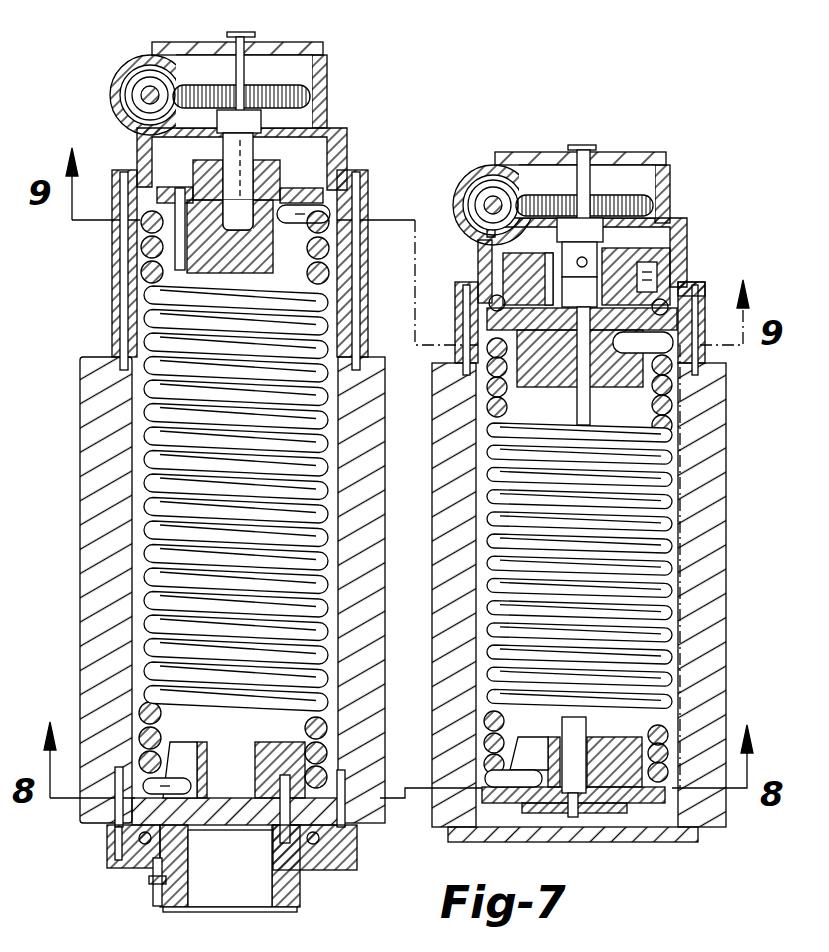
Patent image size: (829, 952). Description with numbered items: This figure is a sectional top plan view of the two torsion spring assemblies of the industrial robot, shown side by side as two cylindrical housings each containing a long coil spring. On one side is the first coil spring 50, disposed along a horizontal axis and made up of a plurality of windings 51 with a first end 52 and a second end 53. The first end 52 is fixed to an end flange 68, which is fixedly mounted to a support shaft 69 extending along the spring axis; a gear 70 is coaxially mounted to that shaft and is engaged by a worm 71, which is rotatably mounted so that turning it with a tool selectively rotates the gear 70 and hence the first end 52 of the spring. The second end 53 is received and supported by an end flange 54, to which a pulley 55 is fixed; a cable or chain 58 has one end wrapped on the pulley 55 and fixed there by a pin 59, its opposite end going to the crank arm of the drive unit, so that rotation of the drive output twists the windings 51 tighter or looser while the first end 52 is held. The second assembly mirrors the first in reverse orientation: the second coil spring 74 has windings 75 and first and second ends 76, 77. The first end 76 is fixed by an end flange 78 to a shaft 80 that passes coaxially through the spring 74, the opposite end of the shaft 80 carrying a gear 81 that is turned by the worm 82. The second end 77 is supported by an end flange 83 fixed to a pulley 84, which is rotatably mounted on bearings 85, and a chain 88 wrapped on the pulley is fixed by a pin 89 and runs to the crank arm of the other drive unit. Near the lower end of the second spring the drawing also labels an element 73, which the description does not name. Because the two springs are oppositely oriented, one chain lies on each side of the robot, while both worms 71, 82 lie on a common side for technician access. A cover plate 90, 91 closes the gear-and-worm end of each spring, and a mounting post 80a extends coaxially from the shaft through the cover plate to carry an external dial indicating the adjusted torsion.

The first coil spring 50 is at (150, 575).
The windings 51 is at (157, 480).
The first end 52 is at (300, 224).
The second end 53 is at (176, 781).
The end flange 54 is at (270, 757).
The pulley 55 is at (262, 888).
The cable or chain 58 is at (156, 897).
The pin 59 is at (150, 870).
The end flange 68 is at (262, 255).
The support shaft 69 is at (228, 160).
The gear 70 is at (298, 85).
The worm 71 is at (138, 102).
The lower spring seat 73 is at (657, 748).
The second coil spring 74 is at (700, 567).
The windings 75 is at (665, 634).
The first end 76 is at (500, 776).
The second end 77 is at (700, 326).
The end flange 78 is at (637, 845).
The shaft 80 is at (584, 414).
The mounting post 80a is at (577, 180).
The gear 81 is at (633, 192).
The worm 82 is at (468, 175).
The end flange 83 is at (510, 335).
The pulley 84 is at (477, 262).
The bearings 85 is at (490, 303).
The chain 88 is at (652, 274).
The pin 89 is at (655, 248).
The cover plate 90 is at (262, 42).
The cover plate 91 is at (637, 152).